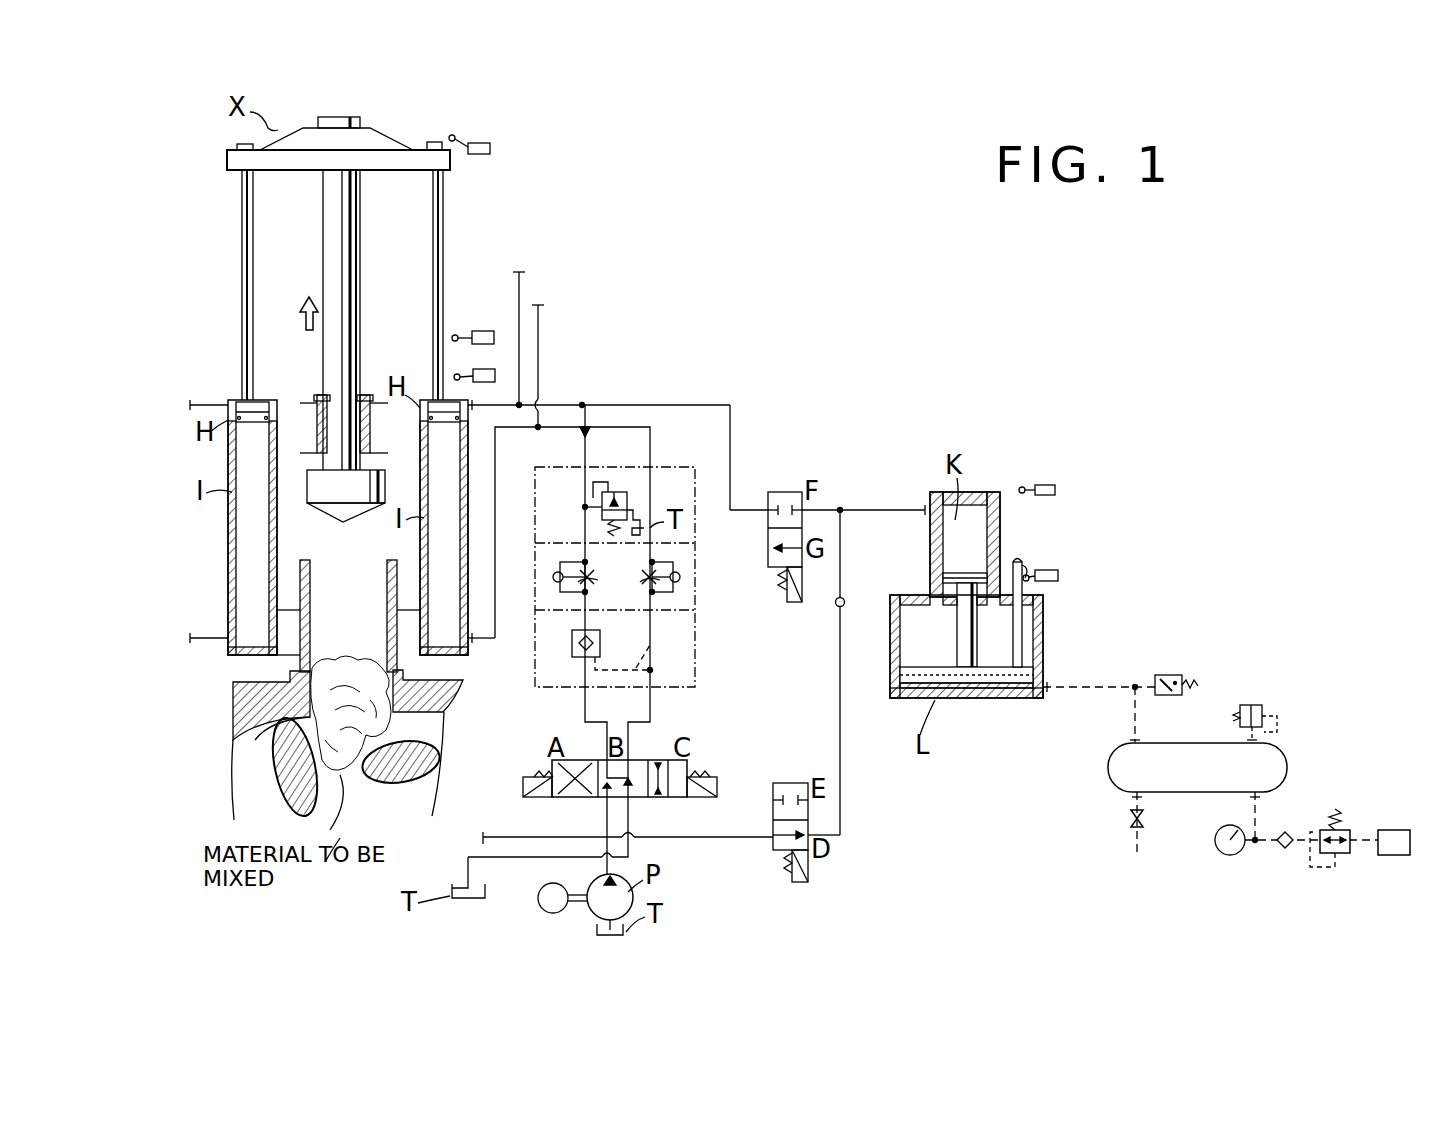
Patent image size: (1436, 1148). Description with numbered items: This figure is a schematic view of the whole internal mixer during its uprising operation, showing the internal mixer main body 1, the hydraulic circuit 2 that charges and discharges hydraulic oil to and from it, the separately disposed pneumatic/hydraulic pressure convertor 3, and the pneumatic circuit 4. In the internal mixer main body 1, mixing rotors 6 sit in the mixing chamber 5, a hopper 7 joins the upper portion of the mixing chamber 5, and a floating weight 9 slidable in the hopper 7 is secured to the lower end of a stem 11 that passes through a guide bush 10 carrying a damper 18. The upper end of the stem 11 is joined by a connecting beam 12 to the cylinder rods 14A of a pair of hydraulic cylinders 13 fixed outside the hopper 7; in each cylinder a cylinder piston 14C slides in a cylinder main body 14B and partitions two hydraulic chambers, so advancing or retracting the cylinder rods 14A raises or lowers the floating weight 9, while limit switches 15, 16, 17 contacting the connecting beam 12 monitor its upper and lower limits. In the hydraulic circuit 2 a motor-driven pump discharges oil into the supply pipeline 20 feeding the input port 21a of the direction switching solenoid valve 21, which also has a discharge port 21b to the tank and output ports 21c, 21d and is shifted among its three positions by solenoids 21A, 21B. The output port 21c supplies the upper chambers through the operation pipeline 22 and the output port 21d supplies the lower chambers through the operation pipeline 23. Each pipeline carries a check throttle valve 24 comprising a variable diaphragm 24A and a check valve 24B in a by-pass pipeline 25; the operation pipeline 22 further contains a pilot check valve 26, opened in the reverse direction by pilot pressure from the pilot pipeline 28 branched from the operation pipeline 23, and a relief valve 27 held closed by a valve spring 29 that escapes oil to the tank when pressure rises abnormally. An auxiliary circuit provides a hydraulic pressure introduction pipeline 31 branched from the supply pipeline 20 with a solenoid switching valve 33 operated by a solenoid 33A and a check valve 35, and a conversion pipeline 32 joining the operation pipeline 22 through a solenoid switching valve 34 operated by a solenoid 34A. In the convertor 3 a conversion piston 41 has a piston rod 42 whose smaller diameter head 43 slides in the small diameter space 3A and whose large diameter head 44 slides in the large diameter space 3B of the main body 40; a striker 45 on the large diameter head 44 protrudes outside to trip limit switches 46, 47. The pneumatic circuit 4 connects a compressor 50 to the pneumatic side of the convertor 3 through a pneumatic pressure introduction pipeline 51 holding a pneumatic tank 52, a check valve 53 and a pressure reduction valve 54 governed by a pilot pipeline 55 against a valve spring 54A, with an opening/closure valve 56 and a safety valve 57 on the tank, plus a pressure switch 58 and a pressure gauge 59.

The internal mixer main body 1 is at (368, 117).
The hydraulic circuit 2 is at (690, 392).
The pneumatic/hydraulic pressure convertor 3 is at (930, 480).
The small diameter space 3A is at (975, 505).
The large diameter space 3B is at (925, 685).
The pneumatic circuit 4 is at (1158, 648).
The mixing chamber 5 is at (238, 758).
The mixing rotors 6 is at (278, 772).
The hopper 7 is at (282, 660).
The floating weight 9 is at (343, 522).
The guide bush 10 is at (300, 418).
The stem 11 is at (360, 230).
The connecting beam 12 is at (388, 145).
The hydraulic cylinders 13 is at (236, 390).
The cylinder rods 14A is at (242, 212).
The cylinder main bodies 14B is at (228, 530).
The cylinder pistons 14C is at (344, 424).
The ON/OFF limit switch 15 is at (490, 148).
The ON/OFF limit switch 16 is at (482, 331).
The ON/OFF limit switch 17 is at (482, 376).
The damper 18 is at (368, 398).
The supply pipeline 20 is at (607, 822).
The direction switching solenoid valve 21 is at (690, 760).
The solenoid 21A is at (523, 790).
The solenoid 21B is at (717, 794).
The input port 21a is at (605, 800).
The discharge port 21b is at (632, 800).
The output port 21c is at (607, 745).
The output port 21d is at (640, 745).
The operation pipeline 22 is at (218, 400).
The operation pipeline 23 is at (200, 635).
The check throttle valve 24 is at (550, 562).
The variable diaphragm 24A is at (600, 580).
The check valve 24B is at (681, 578).
The by-pass pipeline 25 is at (568, 598).
The pilot check valve 26 is at (572, 656).
The relief valve 27 is at (630, 494).
The pilot line 28 is at (642, 651).
The valve spring 29 is at (588, 525).
The hydraulic pressure introduction pipeline 31 is at (876, 510).
The conversion pipeline 32 is at (735, 412).
The solenoid switching valve 33 is at (792, 778).
The solenoid 33A is at (800, 882).
The solenoid switching valve 34 is at (786, 488).
The solenoid 34A is at (793, 602).
The check valve 35 is at (846, 603).
The main body 40 is at (1002, 512).
The conversion piston 41 is at (995, 690).
The piston rod 42 is at (980, 640).
The smaller diameter head 43 is at (975, 575).
The large diameter head 44 is at (955, 690).
The striker 45 is at (1022, 605).
The ON/OFF limit switch 46 is at (1045, 485).
The ON/OFF limit switch 47 is at (1058, 574).
The compressor 50 is at (1396, 830).
The pneumatic pressure introduction pipeline 51 is at (1100, 686).
The pneumatic tank 52 is at (1108, 772).
The check valve 53 is at (1287, 850).
The pressure reduction valve 54 is at (1345, 860).
The valve spring 54A is at (1338, 809).
The pilot pipeline 55 is at (1320, 870).
The opening/closure valve 56 is at (1128, 820).
The safety valve 57 is at (1256, 705).
The pressure switch 58 is at (1170, 675).
The pressure gauge 59 is at (1216, 848).